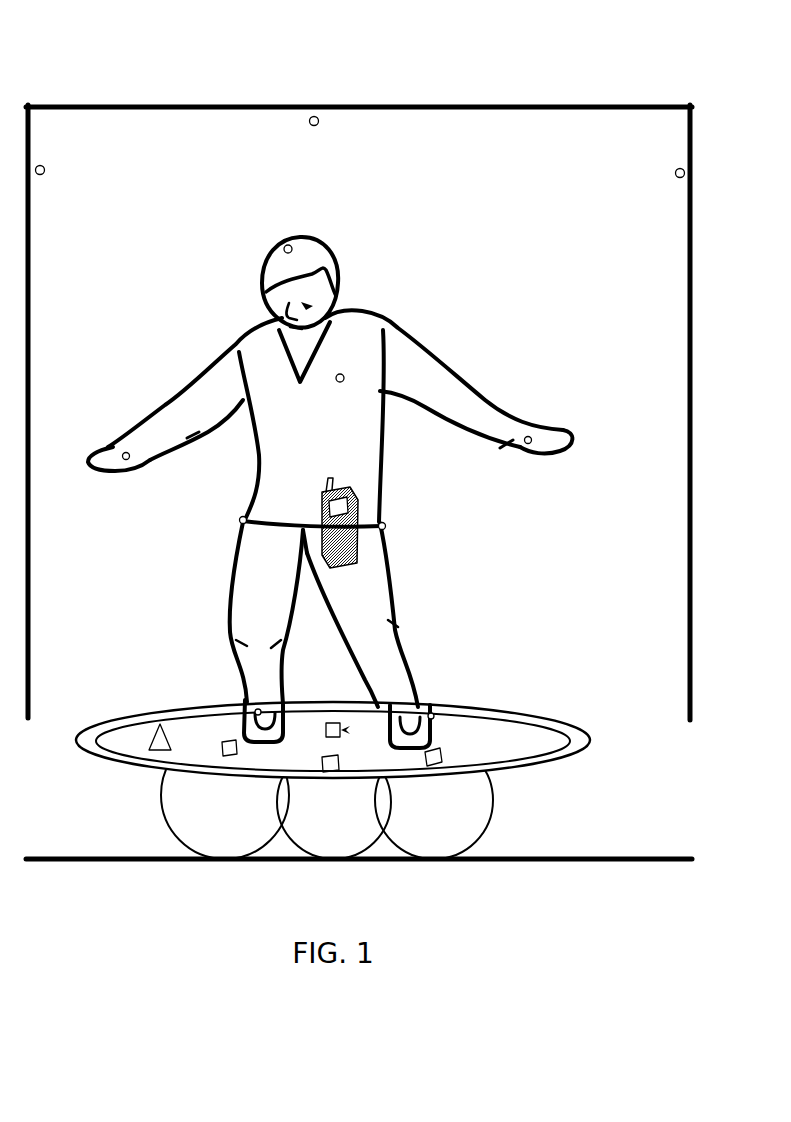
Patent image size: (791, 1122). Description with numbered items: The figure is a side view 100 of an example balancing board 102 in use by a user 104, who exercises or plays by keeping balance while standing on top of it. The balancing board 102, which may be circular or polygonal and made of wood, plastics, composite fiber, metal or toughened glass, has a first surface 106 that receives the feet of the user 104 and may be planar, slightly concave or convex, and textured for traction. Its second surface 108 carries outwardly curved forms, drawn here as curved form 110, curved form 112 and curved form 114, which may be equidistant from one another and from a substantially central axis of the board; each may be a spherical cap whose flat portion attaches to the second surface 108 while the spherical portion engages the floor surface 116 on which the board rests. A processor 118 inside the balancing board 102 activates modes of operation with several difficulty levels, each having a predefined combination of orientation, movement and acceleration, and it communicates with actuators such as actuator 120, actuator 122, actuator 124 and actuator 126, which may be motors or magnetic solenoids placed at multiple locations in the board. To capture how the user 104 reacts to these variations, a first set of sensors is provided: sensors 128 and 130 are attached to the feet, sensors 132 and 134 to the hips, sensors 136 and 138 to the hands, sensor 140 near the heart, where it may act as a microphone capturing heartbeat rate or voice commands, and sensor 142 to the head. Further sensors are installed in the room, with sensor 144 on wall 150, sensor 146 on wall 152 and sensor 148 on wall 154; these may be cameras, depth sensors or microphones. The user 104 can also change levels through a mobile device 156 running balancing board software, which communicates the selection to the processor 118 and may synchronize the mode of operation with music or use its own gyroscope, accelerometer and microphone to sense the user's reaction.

The side view 100 is at (240, 64).
The balancing board 102 is at (358, 744).
The user 104 is at (330, 481).
The first surface 106 is at (540, 730).
The second surface 108 is at (523, 770).
The curved form 110 is at (197, 815).
The curved form 112 is at (350, 857).
The curved form 114 is at (430, 815).
The floor surface 116 is at (655, 857).
The processor 118 is at (145, 728).
The actuator 120 is at (221, 741).
The actuator 122 is at (322, 762).
The actuator 124 is at (428, 758).
The actuator 126 is at (352, 737).
The sensor 128 is at (433, 714).
The sensor 130 is at (256, 710).
The sensor 132 is at (386, 524).
The sensor 134 is at (240, 517).
The sensor 136 is at (530, 445).
The sensor 138 is at (124, 450).
The sensor 140 is at (345, 373).
The sensor 142 is at (292, 246).
The sensor 144 is at (44, 176).
The sensor 146 is at (675, 180).
The sensor 148 is at (319, 126).
The wall 150 is at (38, 300).
The wall 152 is at (673, 313).
The wall 154 is at (427, 117).
The mobile device 156 is at (348, 556).